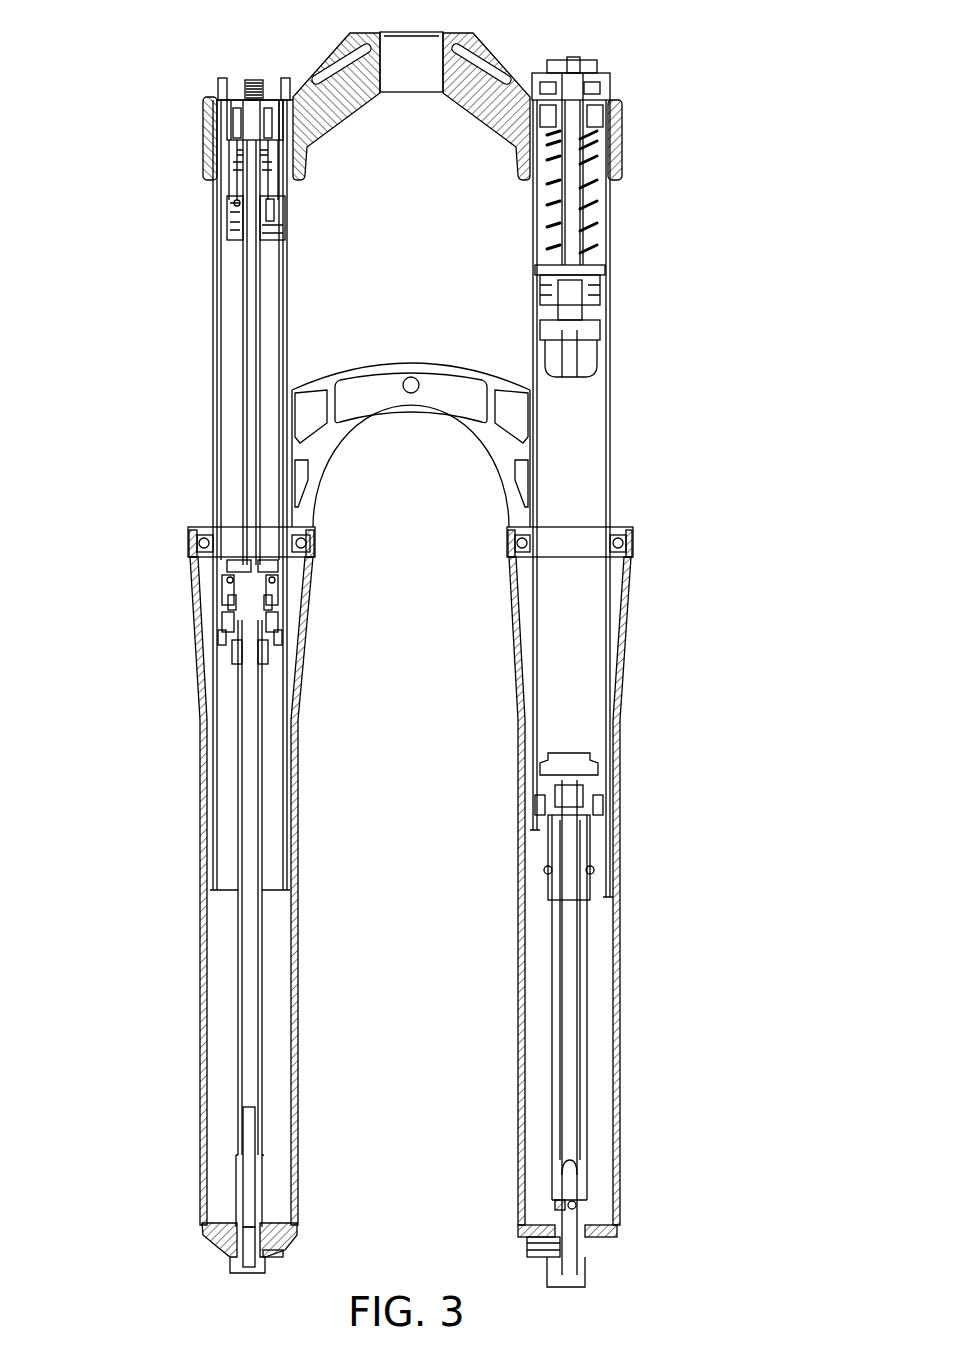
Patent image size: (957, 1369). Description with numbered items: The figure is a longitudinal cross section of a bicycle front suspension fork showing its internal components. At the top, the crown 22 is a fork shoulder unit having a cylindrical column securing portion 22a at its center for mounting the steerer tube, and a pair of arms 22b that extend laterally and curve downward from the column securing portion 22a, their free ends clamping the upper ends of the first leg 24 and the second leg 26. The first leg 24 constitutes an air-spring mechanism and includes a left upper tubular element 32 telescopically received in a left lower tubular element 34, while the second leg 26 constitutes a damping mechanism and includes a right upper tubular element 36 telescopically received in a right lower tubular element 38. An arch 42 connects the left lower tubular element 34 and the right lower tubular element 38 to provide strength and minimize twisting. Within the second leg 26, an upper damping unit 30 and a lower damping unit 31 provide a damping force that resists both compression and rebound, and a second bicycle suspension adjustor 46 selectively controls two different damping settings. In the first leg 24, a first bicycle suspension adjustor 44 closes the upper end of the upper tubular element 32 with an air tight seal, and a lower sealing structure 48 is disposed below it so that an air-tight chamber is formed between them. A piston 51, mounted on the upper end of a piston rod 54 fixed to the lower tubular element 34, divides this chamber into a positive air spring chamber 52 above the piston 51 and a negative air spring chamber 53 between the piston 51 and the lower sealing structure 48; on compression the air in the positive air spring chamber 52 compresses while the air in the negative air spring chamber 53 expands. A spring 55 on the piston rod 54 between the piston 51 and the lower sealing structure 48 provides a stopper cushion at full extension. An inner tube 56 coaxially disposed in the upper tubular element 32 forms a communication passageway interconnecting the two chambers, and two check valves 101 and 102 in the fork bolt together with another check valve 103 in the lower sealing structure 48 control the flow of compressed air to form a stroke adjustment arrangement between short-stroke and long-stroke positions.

The crown 22 is at (401, 92).
The column securing portion 22a is at (428, 33).
The arms 22b is at (330, 112).
The first leg 24 is at (219, 650).
The second leg 26 is at (630, 644).
The upper damping unit 30 is at (576, 392).
The lower damping unit 31 is at (570, 740).
The left upper tubular element 32 is at (213, 468).
The left lower tubular element 34 is at (232, 585).
The right upper tubular element 36 is at (610, 468).
The right lower tubular element 38 is at (620, 645).
The arch 42 is at (443, 362).
The first bicycle suspension adjustor 44 is at (242, 64).
The second bicycle suspension adjustor 46 is at (592, 36).
The lower sealing structure 48 is at (233, 665).
The piston 51 is at (268, 535).
The positive air spring chamber 52 is at (235, 353).
The negative air spring chamber 53 is at (232, 582).
The piston rod 54 is at (238, 782).
The spring 55 is at (270, 578).
The inner tube 56 is at (277, 318).
The check valve 101 is at (234, 207).
The check valve 102 is at (276, 209).
The check valve 103 is at (236, 606).